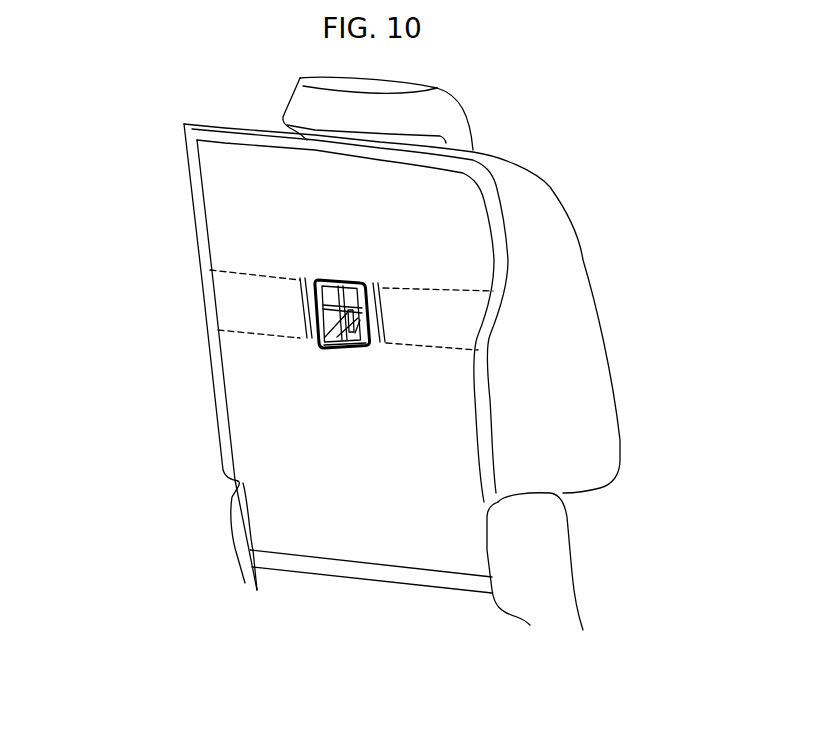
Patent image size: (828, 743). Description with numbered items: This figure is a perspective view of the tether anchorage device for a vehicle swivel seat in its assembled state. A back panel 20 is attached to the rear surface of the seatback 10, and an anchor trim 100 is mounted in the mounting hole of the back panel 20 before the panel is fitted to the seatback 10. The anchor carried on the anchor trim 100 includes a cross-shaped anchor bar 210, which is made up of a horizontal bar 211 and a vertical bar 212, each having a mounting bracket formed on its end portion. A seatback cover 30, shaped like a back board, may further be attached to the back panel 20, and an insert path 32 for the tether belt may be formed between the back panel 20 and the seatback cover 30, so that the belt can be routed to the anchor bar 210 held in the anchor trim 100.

The seatback 10 is at (553, 180).
The back panel 20 is at (190, 133).
The seatback cover 30 is at (233, 215).
The insert path 32 is at (443, 290).
The anchor trim 100 is at (303, 292).
The anchor bar 210 is at (233, 369).
The horizontal bar 211 is at (320, 307).
The vertical bar 212 is at (325, 341).